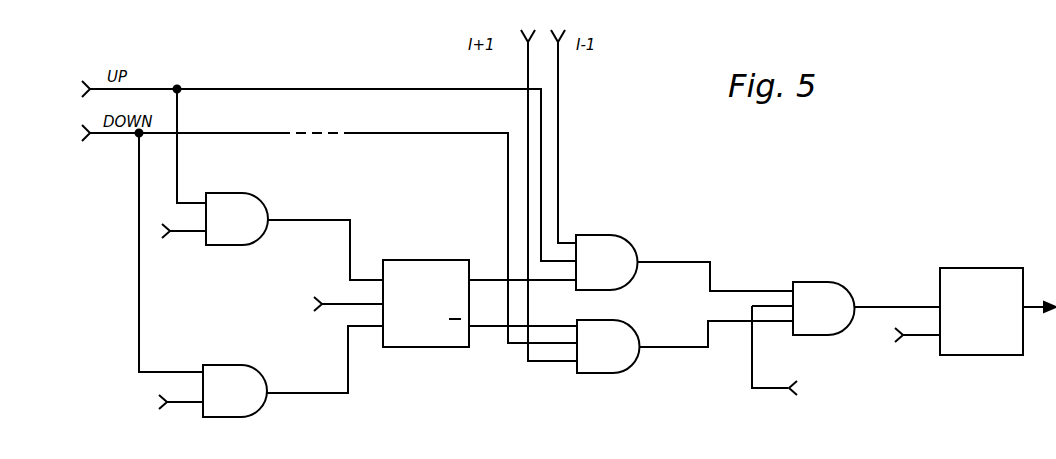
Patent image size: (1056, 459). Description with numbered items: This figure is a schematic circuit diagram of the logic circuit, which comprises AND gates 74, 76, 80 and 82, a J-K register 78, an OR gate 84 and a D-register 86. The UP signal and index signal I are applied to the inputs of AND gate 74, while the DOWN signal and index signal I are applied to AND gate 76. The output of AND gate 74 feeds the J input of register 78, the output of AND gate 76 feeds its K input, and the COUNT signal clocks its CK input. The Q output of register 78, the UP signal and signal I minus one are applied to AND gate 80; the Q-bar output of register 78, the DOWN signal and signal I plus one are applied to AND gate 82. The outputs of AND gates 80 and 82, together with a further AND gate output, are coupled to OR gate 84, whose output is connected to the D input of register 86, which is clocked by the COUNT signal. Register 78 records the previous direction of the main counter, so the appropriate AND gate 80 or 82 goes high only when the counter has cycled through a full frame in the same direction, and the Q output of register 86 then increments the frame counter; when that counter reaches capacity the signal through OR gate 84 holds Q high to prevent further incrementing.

The AND gate 74 is at (262, 193).
The AND gate 76 is at (243, 365).
The J-K register 78 is at (432, 260).
The AND gate 80 is at (603, 235).
The AND gate 82 is at (622, 322).
The OR gate 84 is at (820, 282).
The D-register 86 is at (957, 268).